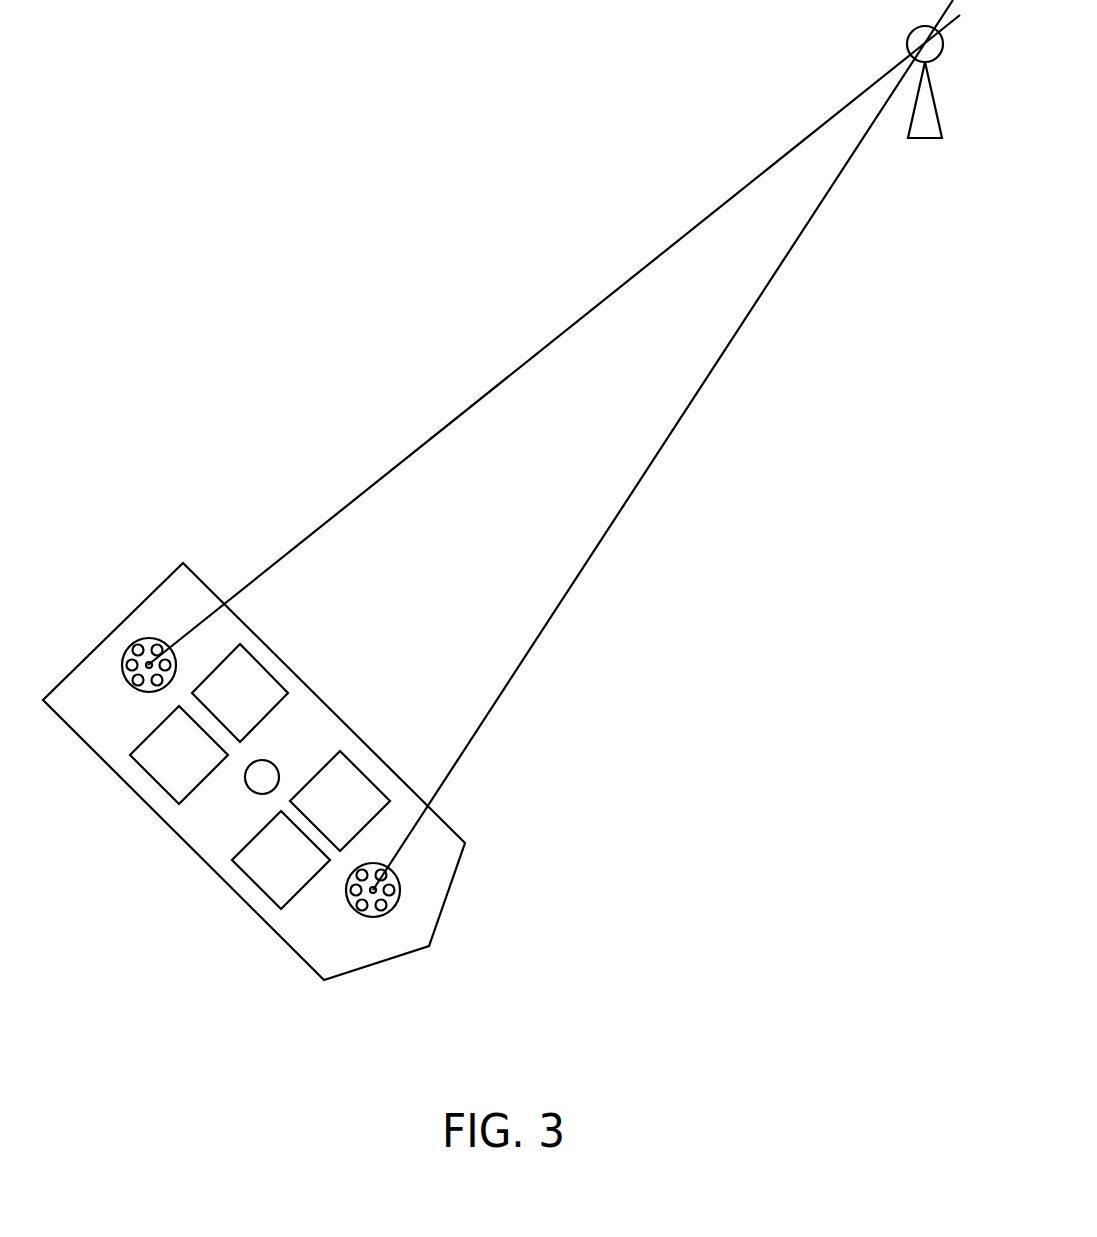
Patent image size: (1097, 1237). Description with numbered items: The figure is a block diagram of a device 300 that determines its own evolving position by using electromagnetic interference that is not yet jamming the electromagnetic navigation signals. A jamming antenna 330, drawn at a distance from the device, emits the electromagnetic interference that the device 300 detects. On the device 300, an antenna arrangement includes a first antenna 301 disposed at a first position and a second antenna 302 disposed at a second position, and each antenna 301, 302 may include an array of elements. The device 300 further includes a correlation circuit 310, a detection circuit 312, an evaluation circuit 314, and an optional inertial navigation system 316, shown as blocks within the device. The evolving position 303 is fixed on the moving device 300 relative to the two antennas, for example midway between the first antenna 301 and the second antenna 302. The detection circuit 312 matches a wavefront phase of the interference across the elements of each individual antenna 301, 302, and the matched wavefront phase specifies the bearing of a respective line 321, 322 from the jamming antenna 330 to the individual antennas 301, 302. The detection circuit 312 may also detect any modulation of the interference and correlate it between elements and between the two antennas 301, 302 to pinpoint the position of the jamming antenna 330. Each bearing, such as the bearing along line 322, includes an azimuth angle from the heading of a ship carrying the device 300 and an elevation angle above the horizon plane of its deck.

The device 300 is at (183, 563).
The first antenna 301 is at (122, 665).
The second antenna 302 is at (346, 887).
The evolving position 303 is at (246, 773).
The correlation circuit 310 is at (240, 693).
The detection circuit 312 is at (340, 801).
The evaluation circuit 314 is at (281, 860).
The inertial navigation system 316 is at (179, 755).
The line 321 is at (352, 500).
The line 322 is at (627, 500).
The jamming antenna 330 is at (907, 44).